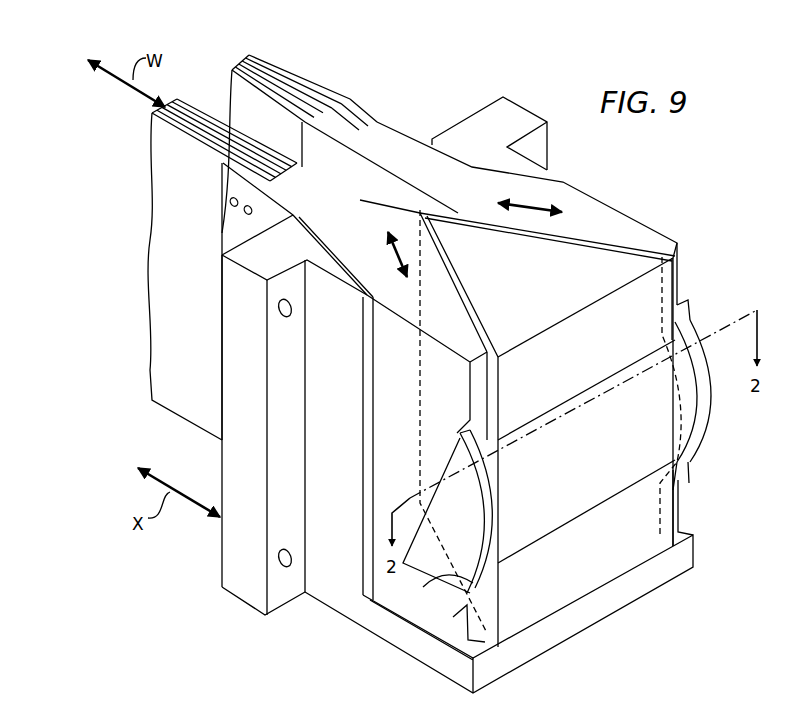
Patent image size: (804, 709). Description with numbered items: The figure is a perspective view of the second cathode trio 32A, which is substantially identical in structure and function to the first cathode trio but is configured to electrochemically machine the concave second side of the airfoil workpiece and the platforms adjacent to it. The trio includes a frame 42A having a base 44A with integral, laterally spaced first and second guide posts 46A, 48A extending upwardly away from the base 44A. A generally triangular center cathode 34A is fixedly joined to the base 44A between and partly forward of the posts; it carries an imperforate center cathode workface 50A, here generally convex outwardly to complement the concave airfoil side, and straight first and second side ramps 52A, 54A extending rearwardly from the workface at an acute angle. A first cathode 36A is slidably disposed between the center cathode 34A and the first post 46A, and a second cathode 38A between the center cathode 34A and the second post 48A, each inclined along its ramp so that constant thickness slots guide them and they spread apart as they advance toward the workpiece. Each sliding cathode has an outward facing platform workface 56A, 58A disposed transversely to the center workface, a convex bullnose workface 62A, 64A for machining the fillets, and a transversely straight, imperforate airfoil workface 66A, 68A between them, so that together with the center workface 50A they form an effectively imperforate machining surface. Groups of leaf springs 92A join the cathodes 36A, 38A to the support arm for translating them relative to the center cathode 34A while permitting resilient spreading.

The second cathode trio 32A is at (80, 189).
The center cathode 34A is at (565, 298).
The first cathode 36A is at (430, 171).
The second cathode 38A is at (357, 223).
The frame 42A is at (218, 570).
The base 44A is at (403, 652).
The first guide post 46A is at (533, 160).
The second guide post 48A is at (318, 547).
The center cathode workface 50A is at (615, 470).
The first side ramp 52A is at (452, 282).
The second side ramp 54A is at (497, 225).
The platform workface 56A is at (685, 322).
The platform workface 58A is at (452, 463).
The bullnose workface 62A is at (712, 403).
The bullnose workface 64A is at (428, 610).
The airfoil workface 66A is at (688, 460).
The airfoil workface 68A is at (498, 563).
The leaf springs 92A is at (153, 157).